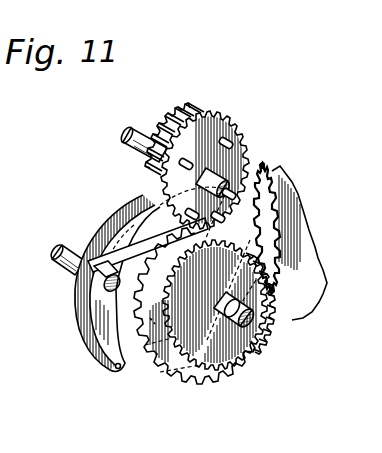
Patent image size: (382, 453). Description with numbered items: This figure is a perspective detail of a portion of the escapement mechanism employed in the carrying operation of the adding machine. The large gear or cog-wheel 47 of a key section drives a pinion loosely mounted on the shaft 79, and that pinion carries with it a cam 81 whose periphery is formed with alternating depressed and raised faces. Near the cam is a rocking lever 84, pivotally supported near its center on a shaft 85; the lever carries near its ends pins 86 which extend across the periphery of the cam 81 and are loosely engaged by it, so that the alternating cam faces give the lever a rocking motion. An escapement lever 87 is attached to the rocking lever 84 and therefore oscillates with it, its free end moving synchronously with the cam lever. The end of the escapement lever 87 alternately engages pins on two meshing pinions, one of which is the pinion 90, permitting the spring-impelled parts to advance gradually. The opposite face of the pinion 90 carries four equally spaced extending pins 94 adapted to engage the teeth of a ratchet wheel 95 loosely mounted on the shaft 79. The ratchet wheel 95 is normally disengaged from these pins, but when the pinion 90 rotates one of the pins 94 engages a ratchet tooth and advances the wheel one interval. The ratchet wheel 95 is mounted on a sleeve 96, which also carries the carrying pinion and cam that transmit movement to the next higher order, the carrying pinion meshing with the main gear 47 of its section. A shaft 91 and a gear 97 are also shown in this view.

The gear or cog-wheel 47 is at (310, 237).
The shaft 79 is at (264, 338).
The cam 81 is at (140, 372).
The rocking lever 84 is at (88, 327).
The shaft 85 is at (64, 246).
The pins 86 is at (108, 364).
The escapement lever 87 is at (148, 256).
The pinion 90 is at (201, 113).
The shaft 91 is at (143, 131).
The extending pins 94 is at (229, 193).
The ratchet wheel 95 is at (193, 382).
The sleeve 96 is at (232, 373).
The gear 97 is at (262, 280).